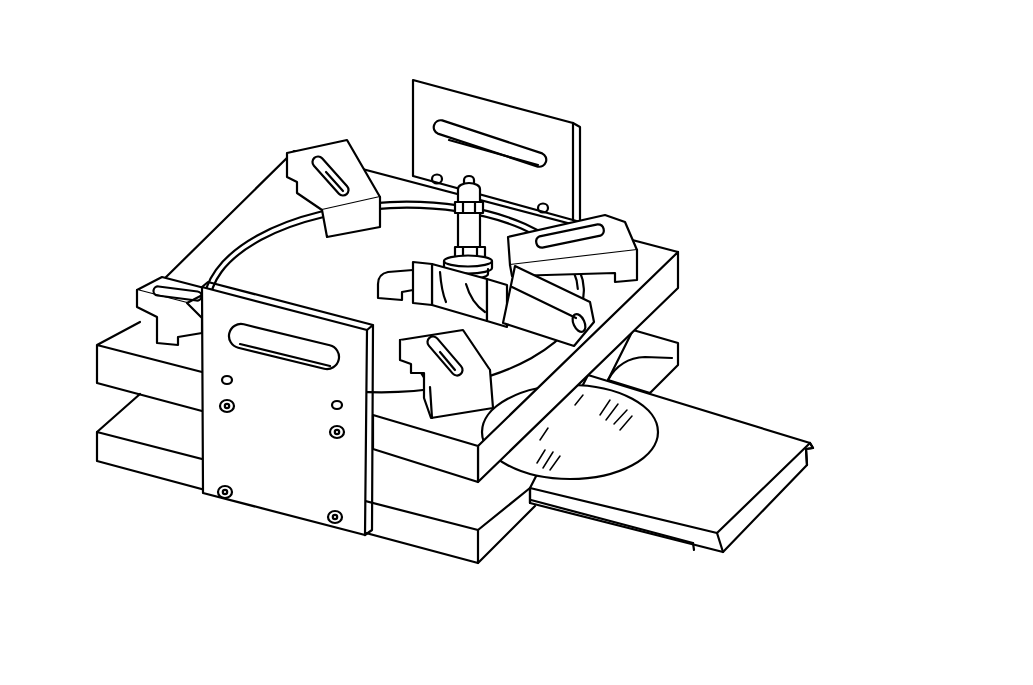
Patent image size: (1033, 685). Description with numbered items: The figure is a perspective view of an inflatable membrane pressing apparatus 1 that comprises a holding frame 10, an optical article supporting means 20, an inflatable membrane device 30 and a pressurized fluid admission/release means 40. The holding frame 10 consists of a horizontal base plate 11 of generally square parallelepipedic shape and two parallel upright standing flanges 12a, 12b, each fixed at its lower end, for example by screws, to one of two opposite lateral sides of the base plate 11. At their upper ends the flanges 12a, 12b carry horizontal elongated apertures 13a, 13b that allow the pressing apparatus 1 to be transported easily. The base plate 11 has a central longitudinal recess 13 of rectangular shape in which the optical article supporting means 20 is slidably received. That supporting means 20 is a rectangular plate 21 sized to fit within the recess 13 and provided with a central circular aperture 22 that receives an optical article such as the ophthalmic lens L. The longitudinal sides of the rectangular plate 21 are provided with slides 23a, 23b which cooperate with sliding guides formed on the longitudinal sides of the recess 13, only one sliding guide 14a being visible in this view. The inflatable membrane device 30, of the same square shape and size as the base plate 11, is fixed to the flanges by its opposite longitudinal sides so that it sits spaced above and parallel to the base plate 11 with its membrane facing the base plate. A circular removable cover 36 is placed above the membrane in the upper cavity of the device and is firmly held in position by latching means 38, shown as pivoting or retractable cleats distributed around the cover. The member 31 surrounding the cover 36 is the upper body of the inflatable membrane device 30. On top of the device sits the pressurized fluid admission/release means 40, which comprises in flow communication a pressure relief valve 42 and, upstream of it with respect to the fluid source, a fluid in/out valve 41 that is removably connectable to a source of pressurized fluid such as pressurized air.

The inflatable membrane pressing apparatus 1 is at (207, 150).
The holding frame 10 is at (188, 487).
The base plate 11 is at (455, 538).
The flange 12a is at (305, 483).
The flange 12b is at (441, 84).
The central longitudinal recess 13 is at (678, 358).
The horizontal elongated aperture 13a is at (267, 350).
The horizontal elongated aperture 13b is at (470, 135).
The sliding guide 14a is at (531, 503).
The optical article supporting means 20 is at (778, 422).
The rectangular plate 21 is at (773, 483).
The central circular aperture 22 is at (660, 442).
The slide 23a is at (693, 548).
The slide 23b is at (813, 443).
The inflatable membrane device 30 is at (665, 245).
The cover plate 31 is at (190, 253).
The circular removable cover 36 is at (277, 263).
The latching means 38 is at (340, 152).
The pressurized fluid admission/release means 40 is at (490, 188).
The fluid in/out valve 41 is at (563, 320).
The pressure relief valve 42 is at (483, 216).
The ophthalmic lens L is at (585, 456).